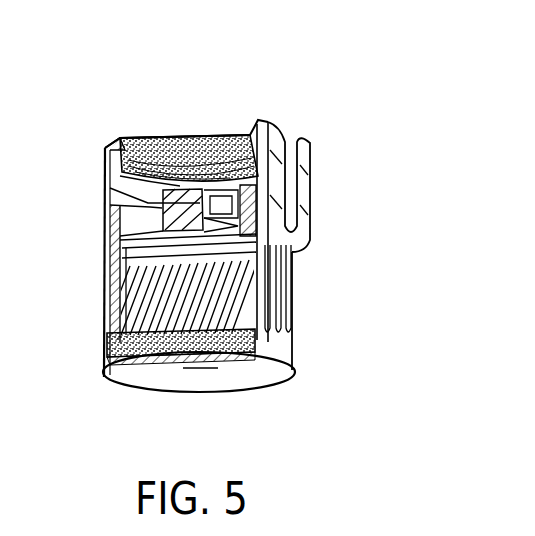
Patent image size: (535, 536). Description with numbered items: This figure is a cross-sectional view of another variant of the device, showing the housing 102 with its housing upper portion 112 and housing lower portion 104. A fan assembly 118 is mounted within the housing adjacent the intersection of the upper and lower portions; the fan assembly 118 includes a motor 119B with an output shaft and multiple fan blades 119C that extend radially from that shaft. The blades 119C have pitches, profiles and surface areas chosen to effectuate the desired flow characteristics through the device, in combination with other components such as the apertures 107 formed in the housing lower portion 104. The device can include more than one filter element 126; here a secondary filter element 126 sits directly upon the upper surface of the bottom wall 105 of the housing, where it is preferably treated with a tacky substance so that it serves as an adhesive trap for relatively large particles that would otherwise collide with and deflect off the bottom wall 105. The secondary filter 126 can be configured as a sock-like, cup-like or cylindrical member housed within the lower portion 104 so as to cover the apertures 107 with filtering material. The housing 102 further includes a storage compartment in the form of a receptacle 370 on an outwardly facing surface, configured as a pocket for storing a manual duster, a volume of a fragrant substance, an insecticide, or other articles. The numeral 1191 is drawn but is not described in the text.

The housing 102 is at (296, 267).
The housing lower portion 104 is at (298, 362).
The bottom wall 105 is at (254, 377).
The apertures 107 is at (288, 308).
The housing upper portion 112 is at (101, 168).
The fan assembly 118 is at (170, 250).
The motor 119B is at (107, 243).
The fan blades 119C is at (110, 188).
The valve element 1191 is at (205, 197).
The filter element 126 is at (222, 141).
The receptacle 370 is at (284, 143).